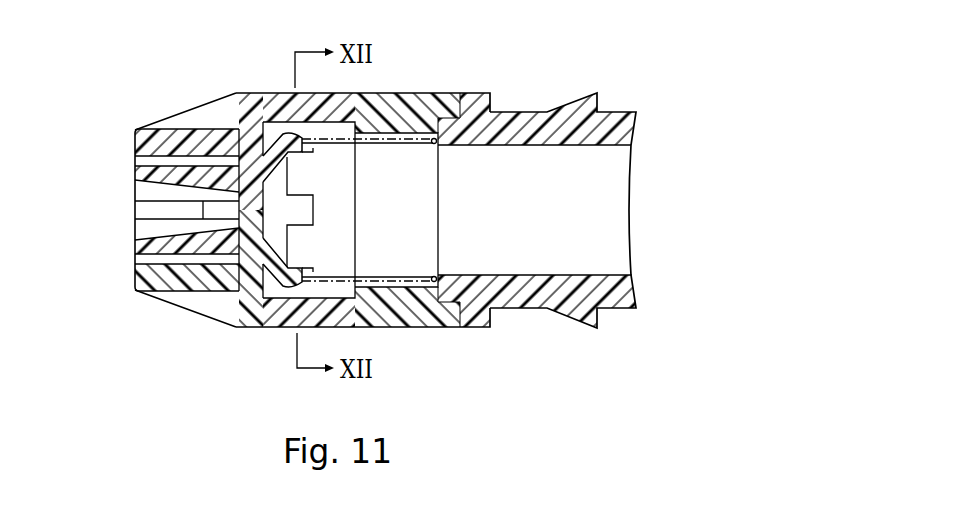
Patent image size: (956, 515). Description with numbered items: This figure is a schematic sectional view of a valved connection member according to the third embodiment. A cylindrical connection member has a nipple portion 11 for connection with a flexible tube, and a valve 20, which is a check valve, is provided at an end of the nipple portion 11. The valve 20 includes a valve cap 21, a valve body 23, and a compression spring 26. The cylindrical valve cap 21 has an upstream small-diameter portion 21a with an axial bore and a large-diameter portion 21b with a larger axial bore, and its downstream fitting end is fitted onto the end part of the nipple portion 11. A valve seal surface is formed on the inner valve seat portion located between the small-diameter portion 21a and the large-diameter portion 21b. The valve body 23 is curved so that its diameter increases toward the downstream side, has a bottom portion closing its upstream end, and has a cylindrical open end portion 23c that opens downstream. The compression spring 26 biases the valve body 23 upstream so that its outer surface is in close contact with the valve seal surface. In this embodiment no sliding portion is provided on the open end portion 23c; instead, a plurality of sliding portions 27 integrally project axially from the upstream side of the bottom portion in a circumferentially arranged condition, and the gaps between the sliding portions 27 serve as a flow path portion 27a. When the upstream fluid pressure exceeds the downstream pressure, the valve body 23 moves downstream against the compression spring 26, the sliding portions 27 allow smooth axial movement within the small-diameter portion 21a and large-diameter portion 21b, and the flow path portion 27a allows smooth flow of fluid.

The nipple portion 11 is at (519, 112).
The valve 20 is at (197, 97).
The valve cap 21 is at (248, 94).
The small-diameter portion 21a is at (143, 127).
The large-diameter portion 21b is at (403, 92).
The valve body 23 is at (275, 287).
The open end portion 23c is at (277, 92).
The compression spring 26 is at (340, 283).
The sliding portions 27 is at (133, 168).
The flow path portion 27a is at (148, 232).